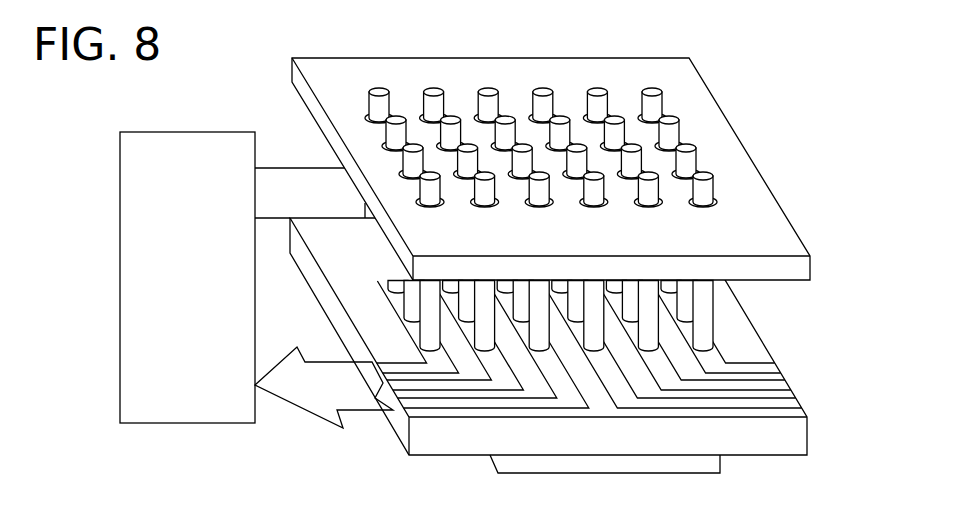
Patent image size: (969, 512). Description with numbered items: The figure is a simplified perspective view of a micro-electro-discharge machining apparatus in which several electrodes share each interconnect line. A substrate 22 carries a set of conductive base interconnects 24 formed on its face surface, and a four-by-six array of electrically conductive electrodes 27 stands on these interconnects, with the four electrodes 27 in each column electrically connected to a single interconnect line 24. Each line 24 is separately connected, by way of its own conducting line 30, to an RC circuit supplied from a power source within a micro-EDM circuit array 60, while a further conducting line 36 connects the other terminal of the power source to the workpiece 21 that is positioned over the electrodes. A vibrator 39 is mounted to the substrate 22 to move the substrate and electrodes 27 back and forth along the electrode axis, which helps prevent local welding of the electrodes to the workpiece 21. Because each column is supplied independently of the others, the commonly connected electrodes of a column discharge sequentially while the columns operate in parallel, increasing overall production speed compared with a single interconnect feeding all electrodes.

The circuit array 60 is at (118, 318).
The conducting line 36 is at (283, 168).
The workpiece 21 is at (763, 212).
The electrodes 27 is at (500, 122).
The substrate 22 is at (808, 431).
The base interconnects 24 is at (790, 402).
The conducting line 30 is at (312, 396).
The vibrator 39 is at (722, 463).